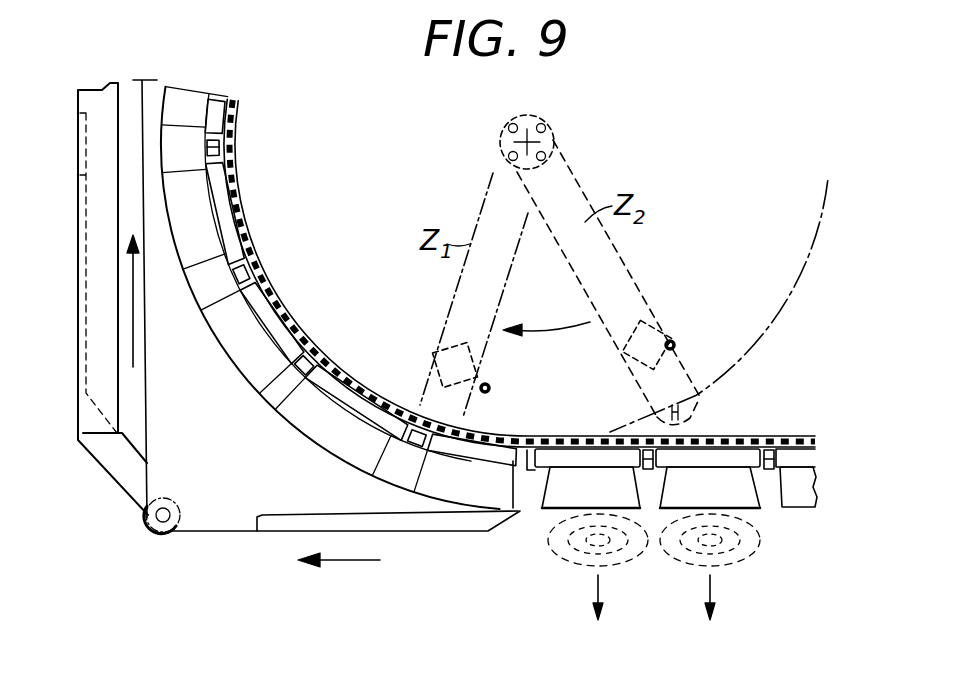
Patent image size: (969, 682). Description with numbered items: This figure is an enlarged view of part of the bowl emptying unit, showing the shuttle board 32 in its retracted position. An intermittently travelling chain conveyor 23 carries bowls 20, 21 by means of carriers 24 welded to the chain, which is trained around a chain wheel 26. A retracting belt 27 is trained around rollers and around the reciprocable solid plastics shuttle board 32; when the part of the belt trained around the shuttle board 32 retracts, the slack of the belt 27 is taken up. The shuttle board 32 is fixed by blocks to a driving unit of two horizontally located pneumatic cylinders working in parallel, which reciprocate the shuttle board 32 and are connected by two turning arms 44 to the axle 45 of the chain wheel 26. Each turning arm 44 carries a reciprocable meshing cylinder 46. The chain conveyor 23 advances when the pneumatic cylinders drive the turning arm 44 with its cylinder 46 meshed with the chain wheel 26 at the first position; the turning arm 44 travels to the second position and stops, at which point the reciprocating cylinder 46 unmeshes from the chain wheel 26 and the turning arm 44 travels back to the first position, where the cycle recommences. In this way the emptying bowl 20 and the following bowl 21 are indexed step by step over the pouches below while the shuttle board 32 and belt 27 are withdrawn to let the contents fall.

The bowl 20 is at (580, 470).
The bowl 21 is at (806, 494).
The chain conveyor 23 is at (237, 204).
The carrier 24 is at (295, 330).
The chain wheel 26 is at (784, 300).
The retracting belt 27 is at (236, 357).
The shuttle board 32 is at (262, 513).
The turning arm 44 is at (473, 313).
The axle 45 is at (532, 135).
The meshing cylinder 46 is at (468, 372).